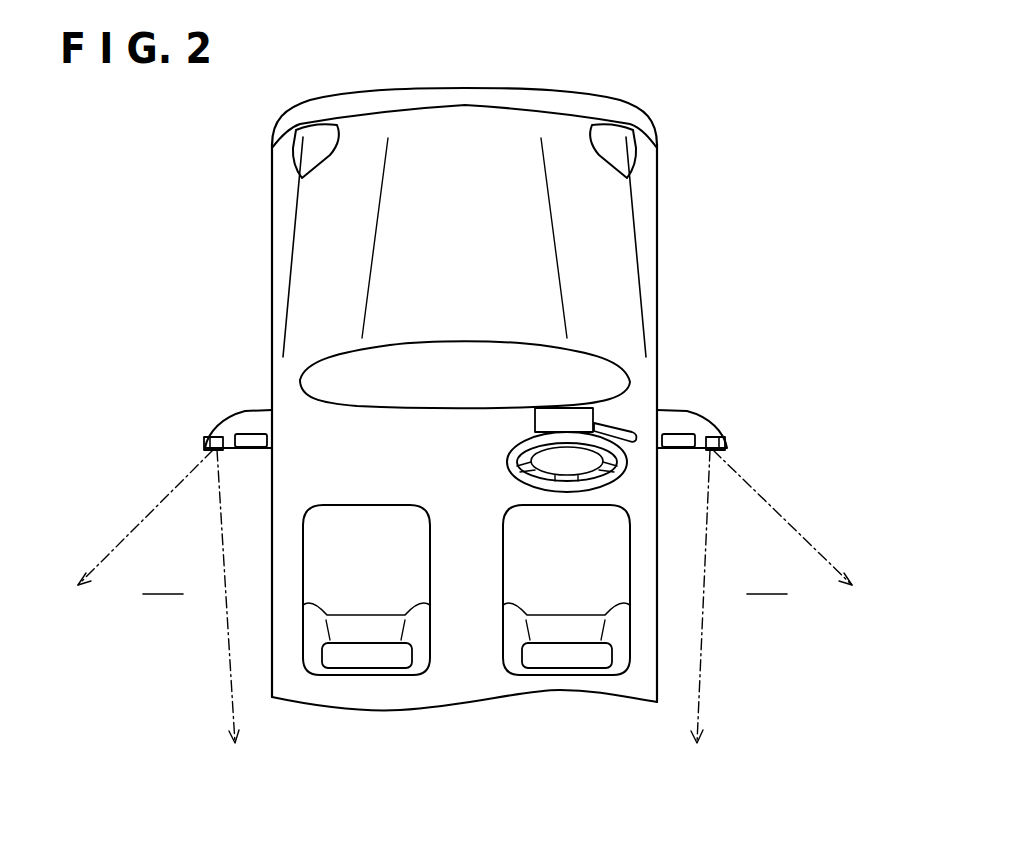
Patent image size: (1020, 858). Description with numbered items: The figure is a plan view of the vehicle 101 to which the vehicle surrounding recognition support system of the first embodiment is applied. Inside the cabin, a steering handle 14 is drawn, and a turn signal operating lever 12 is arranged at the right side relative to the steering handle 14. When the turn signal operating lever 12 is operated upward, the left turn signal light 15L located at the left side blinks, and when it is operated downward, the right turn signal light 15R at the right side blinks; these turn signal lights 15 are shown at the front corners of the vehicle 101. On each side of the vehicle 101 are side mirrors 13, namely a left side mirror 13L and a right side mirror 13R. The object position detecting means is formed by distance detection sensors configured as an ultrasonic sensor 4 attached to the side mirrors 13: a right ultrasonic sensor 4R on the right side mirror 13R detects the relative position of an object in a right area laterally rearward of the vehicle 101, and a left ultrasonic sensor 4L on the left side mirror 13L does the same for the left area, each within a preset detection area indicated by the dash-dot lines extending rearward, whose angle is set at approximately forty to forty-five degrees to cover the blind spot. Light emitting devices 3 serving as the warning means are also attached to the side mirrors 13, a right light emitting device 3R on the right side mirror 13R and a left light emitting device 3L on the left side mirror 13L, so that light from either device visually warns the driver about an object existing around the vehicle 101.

The vehicle 101 is at (277, 293).
The turn signal light 15 is at (466, 151).
The left turn signal light 15L is at (297, 150).
The right turn signal light 15R is at (632, 150).
The light emitting device 3 is at (464, 415).
The left light emitting device 3L is at (242, 433).
The right light emitting device 3R is at (688, 437).
The side mirror 13 is at (466, 390).
The left side mirror 13L is at (250, 415).
The right side mirror 13R is at (677, 410).
The ultrasonic sensor 4 is at (465, 581).
The left ultrasonic sensor 4L is at (205, 438).
The right ultrasonic sensor 4R is at (723, 437).
The steering handle 14 is at (507, 462).
The turn signal operating lever 12 is at (635, 440).